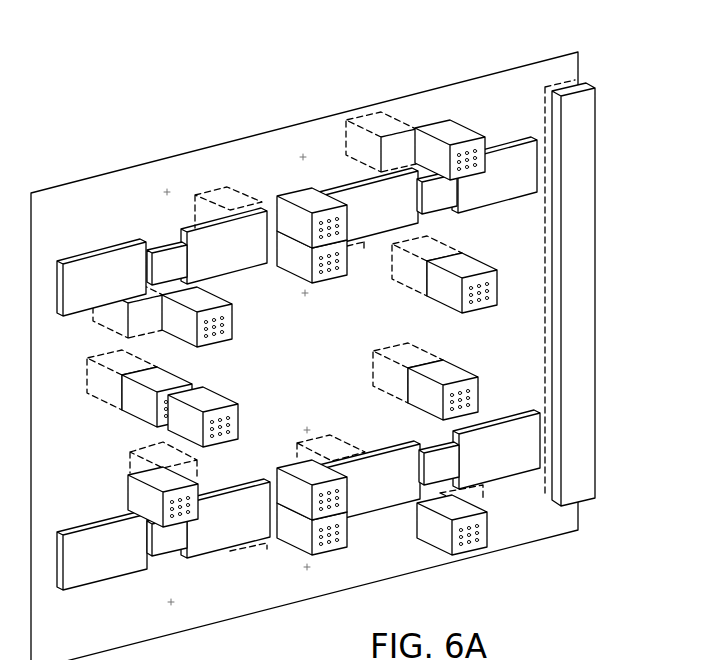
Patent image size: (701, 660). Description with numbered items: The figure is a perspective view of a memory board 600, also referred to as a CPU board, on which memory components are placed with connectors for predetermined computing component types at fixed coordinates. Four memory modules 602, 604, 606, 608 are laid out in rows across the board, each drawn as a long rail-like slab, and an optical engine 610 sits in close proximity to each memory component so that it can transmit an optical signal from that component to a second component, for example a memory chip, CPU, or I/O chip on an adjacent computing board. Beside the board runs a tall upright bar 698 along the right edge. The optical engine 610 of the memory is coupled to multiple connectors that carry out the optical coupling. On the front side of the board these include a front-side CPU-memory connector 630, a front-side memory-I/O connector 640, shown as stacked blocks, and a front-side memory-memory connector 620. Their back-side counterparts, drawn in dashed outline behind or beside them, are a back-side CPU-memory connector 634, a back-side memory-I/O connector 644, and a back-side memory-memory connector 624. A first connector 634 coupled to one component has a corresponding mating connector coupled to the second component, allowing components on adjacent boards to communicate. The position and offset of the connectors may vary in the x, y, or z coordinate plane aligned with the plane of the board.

The memory board 600 is at (578, 53).
The vertical post 698 is at (594, 88).
The memory module 602 is at (60, 263).
The memory module 604 is at (340, 190).
The memory module 606 is at (66, 534).
The memory module 608 is at (381, 455).
The optical engine 610 is at (152, 251).
The front-side memory-memory connector 620 is at (443, 304).
The back-side memory-memory connector 624 is at (407, 283).
The front-side CPU-memory connector 630 is at (449, 120).
The back-side CPU-memory connector 634 is at (396, 116).
The front-side memory-I/O connector 640 is at (290, 196).
The back-side memory-I/O connector 644 is at (227, 188).